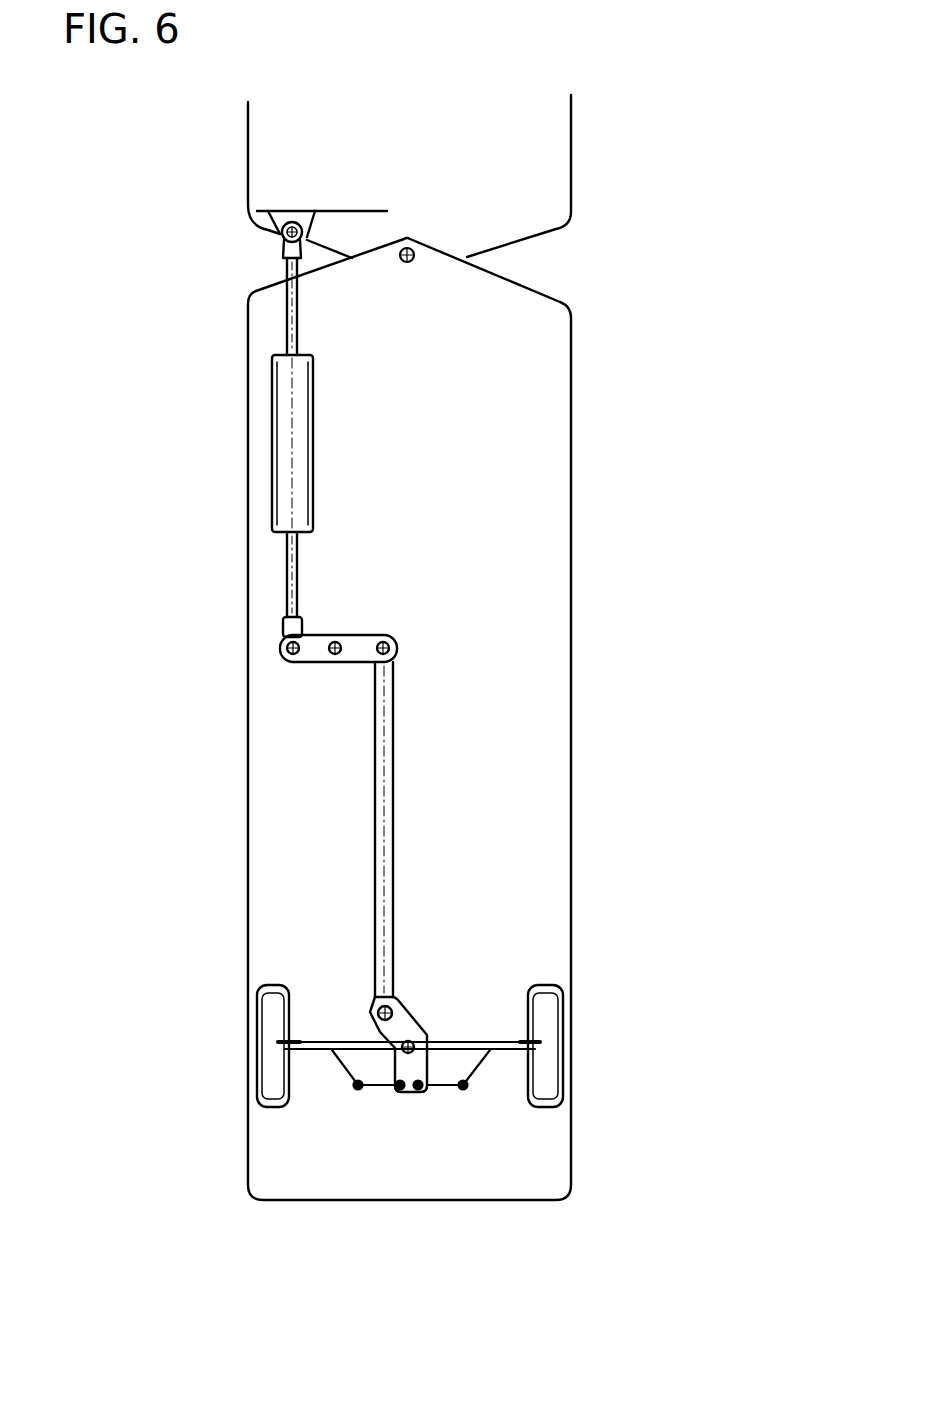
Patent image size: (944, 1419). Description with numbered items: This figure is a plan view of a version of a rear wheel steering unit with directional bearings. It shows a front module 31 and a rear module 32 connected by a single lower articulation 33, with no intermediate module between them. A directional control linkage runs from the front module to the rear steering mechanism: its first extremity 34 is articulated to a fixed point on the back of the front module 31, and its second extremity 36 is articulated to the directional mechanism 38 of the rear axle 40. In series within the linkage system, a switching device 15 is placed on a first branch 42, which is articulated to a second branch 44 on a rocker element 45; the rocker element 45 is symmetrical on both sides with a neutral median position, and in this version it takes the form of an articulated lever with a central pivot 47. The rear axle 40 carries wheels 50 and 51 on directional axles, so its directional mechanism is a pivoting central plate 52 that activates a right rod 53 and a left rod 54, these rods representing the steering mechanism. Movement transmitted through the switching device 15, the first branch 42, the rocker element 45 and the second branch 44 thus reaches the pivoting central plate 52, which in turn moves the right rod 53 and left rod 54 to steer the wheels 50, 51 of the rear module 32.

The front module 31 is at (537, 170).
The rear module 32 is at (517, 582).
The lower articulation 33 is at (435, 279).
The first extremity 34 is at (263, 240).
The first branch 42 is at (232, 368).
The switching device 15 is at (260, 418).
The central pivot 47 is at (316, 642).
The rocker element 45 is at (304, 673).
The second branch 44 is at (356, 790).
The pivoting central plate 52 is at (398, 1027).
The second extremity 36 is at (335, 1005).
The left rod 54 is at (330, 1075).
The rear axle 40 is at (367, 1128).
The directional mechanism 38 is at (412, 1127).
The right rod 53 is at (482, 1090).
The wheel 50 is at (273, 1078).
The wheel 51 is at (547, 1013).